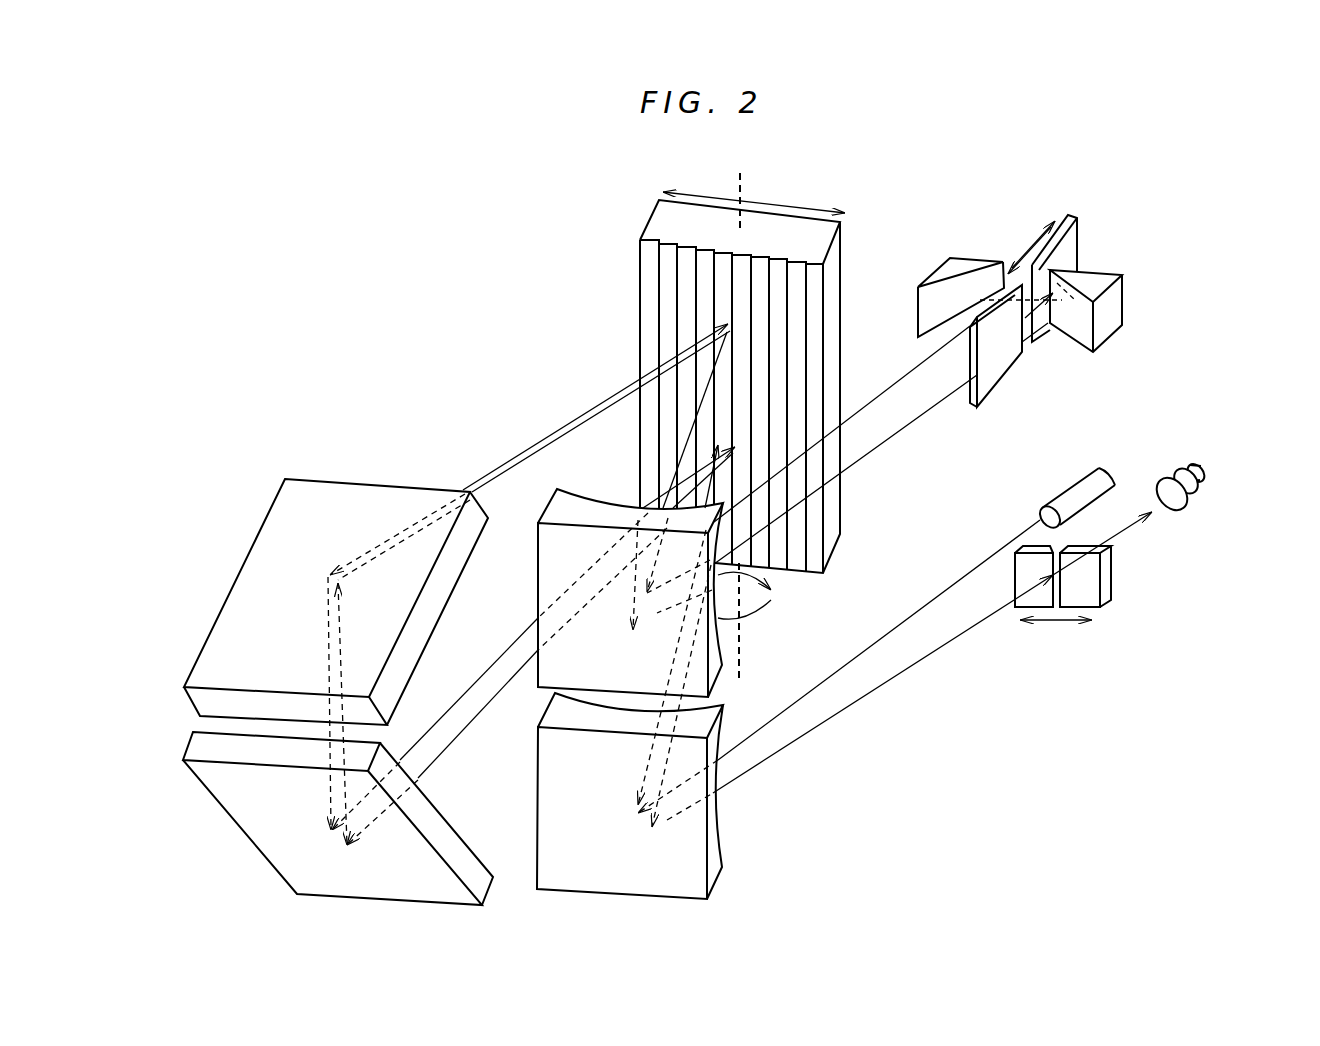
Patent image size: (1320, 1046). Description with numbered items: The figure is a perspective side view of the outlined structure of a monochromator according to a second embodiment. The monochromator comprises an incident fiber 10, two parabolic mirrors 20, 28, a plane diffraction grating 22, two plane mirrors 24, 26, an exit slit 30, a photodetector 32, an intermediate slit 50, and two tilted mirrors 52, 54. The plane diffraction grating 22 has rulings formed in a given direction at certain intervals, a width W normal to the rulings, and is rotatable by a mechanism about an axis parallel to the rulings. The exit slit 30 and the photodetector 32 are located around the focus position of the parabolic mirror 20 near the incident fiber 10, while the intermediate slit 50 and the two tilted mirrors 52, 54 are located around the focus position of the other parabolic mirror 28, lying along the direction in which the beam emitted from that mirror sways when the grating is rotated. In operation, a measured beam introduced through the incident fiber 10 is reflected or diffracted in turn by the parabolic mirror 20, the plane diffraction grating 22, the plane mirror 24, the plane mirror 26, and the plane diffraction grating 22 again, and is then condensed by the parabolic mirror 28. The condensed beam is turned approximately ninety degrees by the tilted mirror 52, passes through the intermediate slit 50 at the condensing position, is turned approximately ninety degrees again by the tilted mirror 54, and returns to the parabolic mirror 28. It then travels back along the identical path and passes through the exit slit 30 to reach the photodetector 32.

The incident fiber 10 is at (1060, 493).
The parabolic mirror 20 is at (712, 843).
The plane diffraction grating 22 is at (833, 260).
The plane mirror 24 is at (417, 805).
The plane mirror 26 is at (400, 493).
The parabolic mirror 28 is at (550, 563).
The exit slit 30 is at (1110, 575).
The photodetector 32 is at (1202, 492).
The intermediate slit 50 is at (1072, 243).
The tilted mirror 52 is at (1117, 312).
The tilted mirror 54 is at (923, 310).